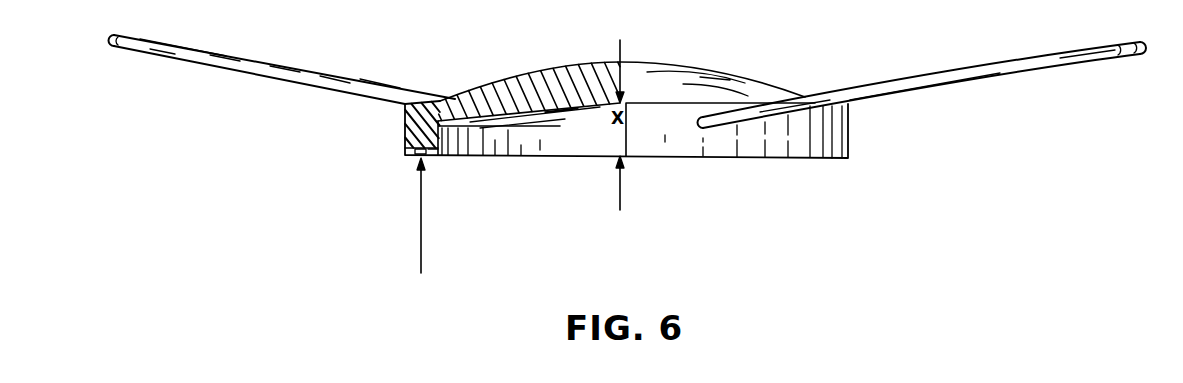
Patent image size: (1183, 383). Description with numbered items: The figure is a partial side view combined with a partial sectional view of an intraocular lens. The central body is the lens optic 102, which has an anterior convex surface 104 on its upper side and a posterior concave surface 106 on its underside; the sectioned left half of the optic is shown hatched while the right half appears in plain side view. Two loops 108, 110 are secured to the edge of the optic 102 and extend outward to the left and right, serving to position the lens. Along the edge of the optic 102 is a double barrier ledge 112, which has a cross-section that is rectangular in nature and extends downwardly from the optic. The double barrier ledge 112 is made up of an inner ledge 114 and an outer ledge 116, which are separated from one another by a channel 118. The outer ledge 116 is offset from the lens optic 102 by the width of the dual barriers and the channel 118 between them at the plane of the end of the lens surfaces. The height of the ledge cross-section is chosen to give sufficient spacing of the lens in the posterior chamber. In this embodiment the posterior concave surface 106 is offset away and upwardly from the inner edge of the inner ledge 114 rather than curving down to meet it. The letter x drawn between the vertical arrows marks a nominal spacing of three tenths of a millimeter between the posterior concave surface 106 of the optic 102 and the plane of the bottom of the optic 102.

The lens optic 102 is at (660, 63).
The anterior convex surface 104 is at (743, 74).
The posterior concave surface 106 is at (573, 118).
The loop 108 is at (138, 51).
The loop 110 is at (1114, 54).
The double barrier ledge 112 is at (429, 227).
The inner ledge 114 is at (437, 158).
The outer ledge 116 is at (409, 157).
The channel 118 is at (417, 159).